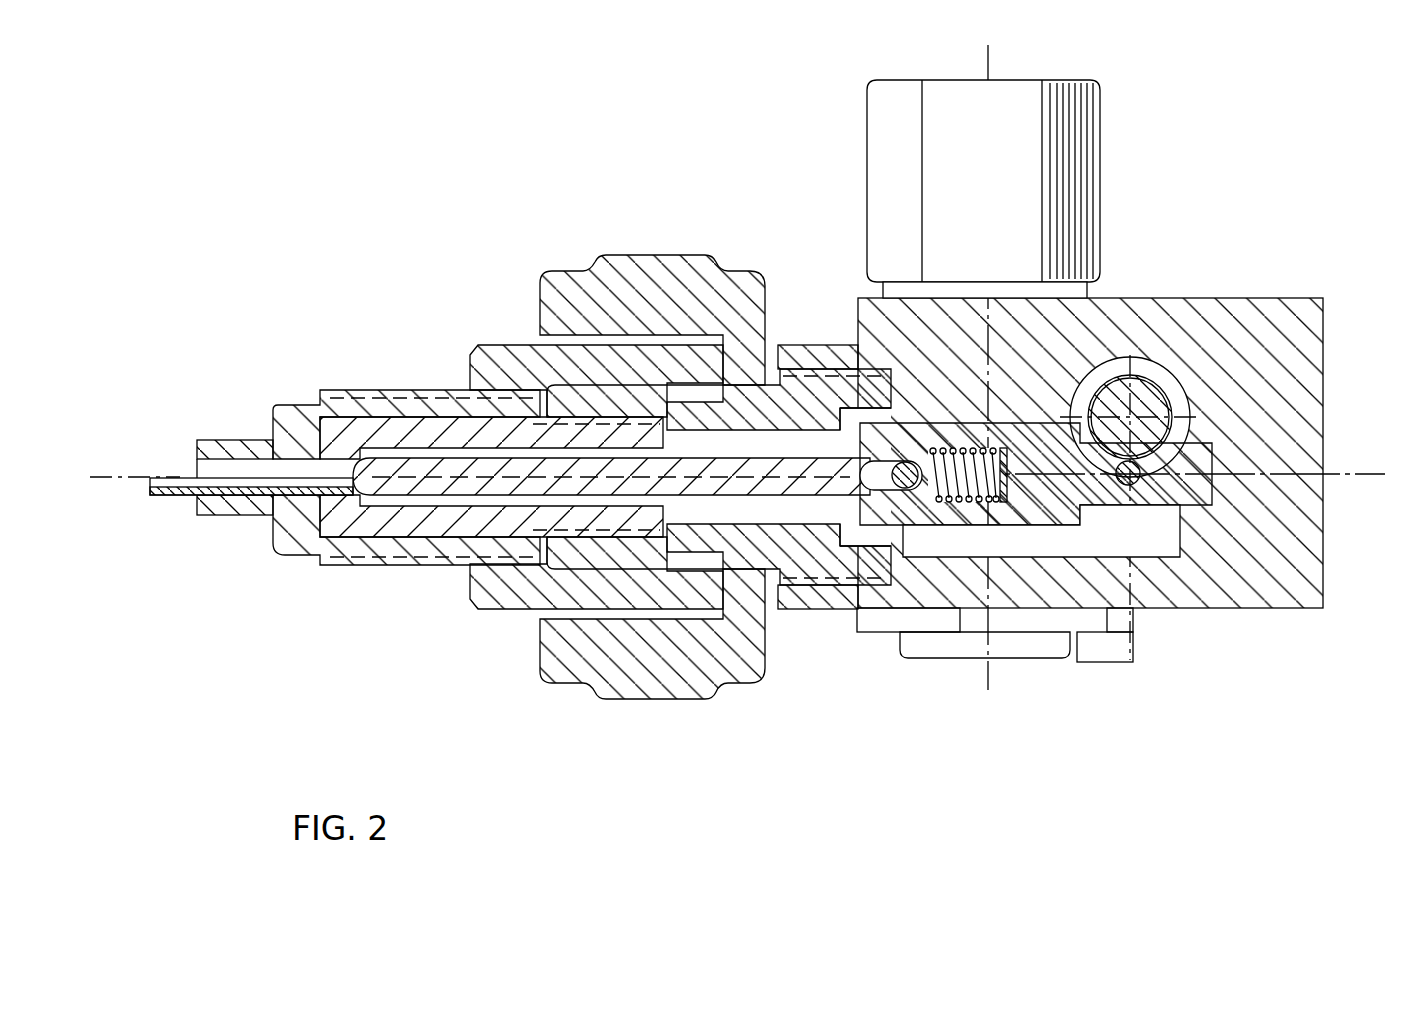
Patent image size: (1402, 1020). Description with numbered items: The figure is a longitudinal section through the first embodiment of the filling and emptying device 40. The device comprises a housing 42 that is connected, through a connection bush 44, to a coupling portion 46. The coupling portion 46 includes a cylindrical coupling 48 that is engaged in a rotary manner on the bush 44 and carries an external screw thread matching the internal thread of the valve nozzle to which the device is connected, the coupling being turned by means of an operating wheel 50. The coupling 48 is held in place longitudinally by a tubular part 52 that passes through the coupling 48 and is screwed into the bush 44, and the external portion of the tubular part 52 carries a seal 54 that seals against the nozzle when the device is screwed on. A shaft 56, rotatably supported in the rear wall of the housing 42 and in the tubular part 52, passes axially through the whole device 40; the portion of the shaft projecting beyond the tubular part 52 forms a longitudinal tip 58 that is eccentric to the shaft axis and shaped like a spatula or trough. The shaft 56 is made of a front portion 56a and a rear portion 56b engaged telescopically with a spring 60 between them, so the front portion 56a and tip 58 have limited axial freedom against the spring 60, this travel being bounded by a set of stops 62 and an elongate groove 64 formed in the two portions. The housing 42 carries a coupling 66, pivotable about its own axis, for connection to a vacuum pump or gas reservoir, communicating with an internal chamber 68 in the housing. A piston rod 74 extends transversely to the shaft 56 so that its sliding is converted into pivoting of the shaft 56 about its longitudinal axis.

The filling and emptying device 40 is at (830, 665).
The housing 42 is at (1165, 300).
The connection bush 44 is at (800, 385).
The coupling portion 46 is at (460, 315).
The cylindrical coupling 48 is at (472, 578).
The operating wheel 50 is at (642, 255).
The tubular part 52 is at (283, 545).
The seal 54 is at (208, 440).
The shaft 56 is at (400, 495).
The front portion 56a is at (372, 458).
The rear portion 56b is at (1027, 527).
The longitudinal tip 58 is at (160, 497).
The spring 60 is at (1020, 442).
The stops 62 is at (930, 449).
The elongate groove 64 is at (900, 463).
The coupling 66 is at (1100, 172).
The internal chamber 68 is at (1150, 547).
The piston rod 74 is at (1165, 395).